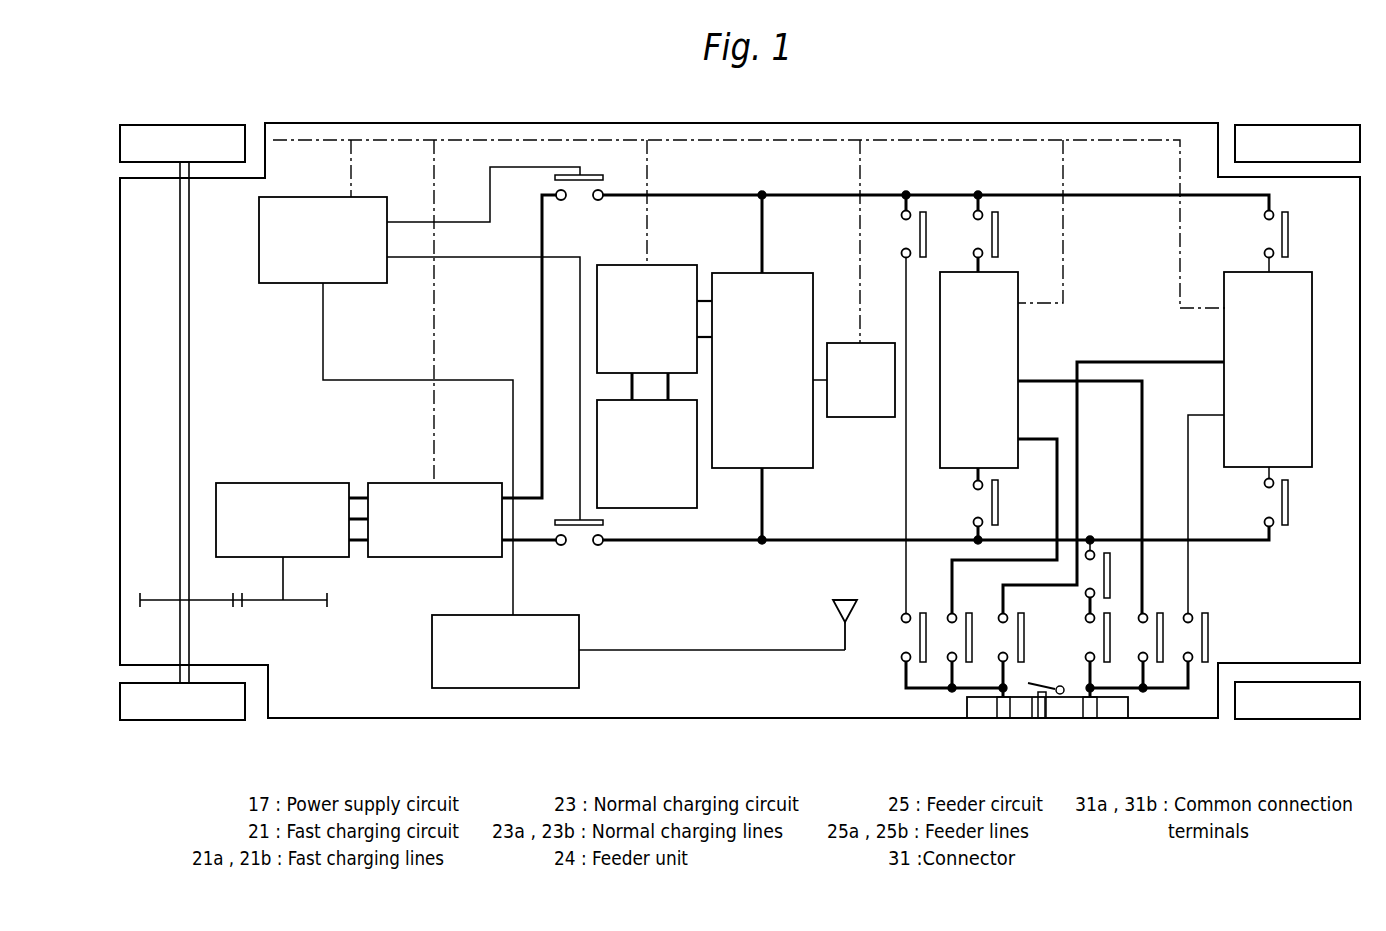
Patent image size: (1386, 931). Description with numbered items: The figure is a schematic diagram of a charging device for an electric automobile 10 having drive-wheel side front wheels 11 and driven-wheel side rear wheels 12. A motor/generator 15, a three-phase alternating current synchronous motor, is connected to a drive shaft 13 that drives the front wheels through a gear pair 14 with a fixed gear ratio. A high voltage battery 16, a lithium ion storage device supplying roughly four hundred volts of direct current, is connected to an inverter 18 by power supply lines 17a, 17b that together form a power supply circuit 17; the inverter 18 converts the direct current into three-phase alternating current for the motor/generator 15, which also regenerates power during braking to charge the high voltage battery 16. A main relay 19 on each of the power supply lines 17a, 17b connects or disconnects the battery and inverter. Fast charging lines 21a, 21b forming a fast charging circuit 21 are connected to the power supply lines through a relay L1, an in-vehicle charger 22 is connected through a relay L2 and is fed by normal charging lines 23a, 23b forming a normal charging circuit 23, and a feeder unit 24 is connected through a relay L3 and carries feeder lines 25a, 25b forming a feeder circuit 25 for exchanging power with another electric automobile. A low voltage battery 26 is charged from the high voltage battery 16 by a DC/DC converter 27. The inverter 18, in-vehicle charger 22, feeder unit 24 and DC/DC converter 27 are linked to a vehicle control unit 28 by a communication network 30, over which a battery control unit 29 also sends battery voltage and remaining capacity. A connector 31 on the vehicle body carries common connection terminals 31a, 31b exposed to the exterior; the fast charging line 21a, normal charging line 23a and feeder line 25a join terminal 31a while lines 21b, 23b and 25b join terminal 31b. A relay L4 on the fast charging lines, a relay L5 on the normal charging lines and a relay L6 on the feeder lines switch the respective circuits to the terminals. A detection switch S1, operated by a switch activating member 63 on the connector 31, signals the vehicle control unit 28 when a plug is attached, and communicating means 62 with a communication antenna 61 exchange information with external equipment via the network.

The electric automobile 10 is at (961, 122).
The front wheels 11 is at (205, 136).
The rear wheels 12 is at (1300, 128).
The drive shaft 13 is at (178, 396).
The gear pair 14 is at (303, 605).
The motor/generator 15 is at (235, 482).
The high voltage battery 16 is at (733, 470).
The power supply circuit 17 is at (936, 336).
The power supply line 17a is at (715, 192).
The power supply line 17b is at (738, 545).
The inverter 18 is at (385, 482).
The main relay 19 is at (553, 178).
The fast charging circuit 21 is at (983, 404).
The fast charging line 21a is at (903, 566).
The fast charging line 21b is at (1090, 537).
The in-vehicle charger 22 is at (1018, 324).
The normal charging circuit 23 is at (1085, 477).
The normal charging line 23a is at (1052, 438).
The normal charging line 23b is at (1052, 379).
The feeder unit 24 is at (1313, 358).
The feeder circuit 25 is at (1123, 449).
The feeder line 25a is at (1108, 360).
The feeder line 25b is at (1190, 500).
The low voltage battery 26 is at (672, 510).
The DC/DC converter 27 is at (672, 263).
The vehicle control unit (EVCU) 28 is at (346, 287).
The battery control unit (BCU) 29 is at (838, 341).
The communication network 30 is at (1112, 140).
The connector 31 is at (1047, 687).
The common connection terminal 31a is at (1003, 712).
The common connection terminal 31b is at (1090, 712).
The communication antenna 61 is at (837, 598).
The communicating means 62 is at (470, 613).
The switch activating member 63 is at (1045, 708).
The detection switch S1 is at (1036, 706).
The relay L1 is at (1112, 571).
The relay L2 is at (1002, 367).
The relay L3 is at (1292, 369).
The relay L4 is at (927, 608).
The relay L5 is at (973, 608).
The relay L6 is at (1026, 635).